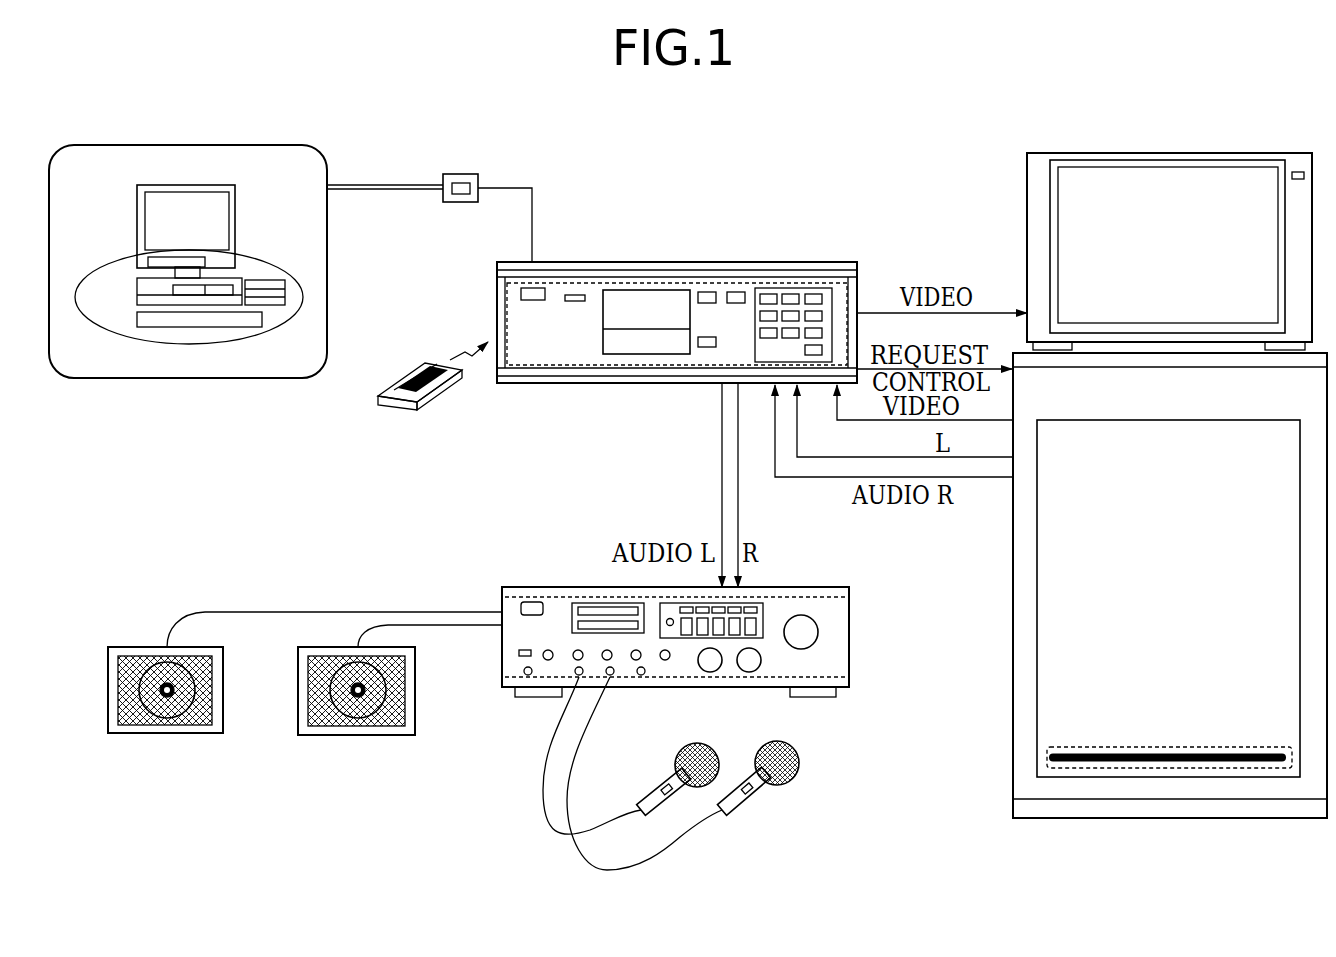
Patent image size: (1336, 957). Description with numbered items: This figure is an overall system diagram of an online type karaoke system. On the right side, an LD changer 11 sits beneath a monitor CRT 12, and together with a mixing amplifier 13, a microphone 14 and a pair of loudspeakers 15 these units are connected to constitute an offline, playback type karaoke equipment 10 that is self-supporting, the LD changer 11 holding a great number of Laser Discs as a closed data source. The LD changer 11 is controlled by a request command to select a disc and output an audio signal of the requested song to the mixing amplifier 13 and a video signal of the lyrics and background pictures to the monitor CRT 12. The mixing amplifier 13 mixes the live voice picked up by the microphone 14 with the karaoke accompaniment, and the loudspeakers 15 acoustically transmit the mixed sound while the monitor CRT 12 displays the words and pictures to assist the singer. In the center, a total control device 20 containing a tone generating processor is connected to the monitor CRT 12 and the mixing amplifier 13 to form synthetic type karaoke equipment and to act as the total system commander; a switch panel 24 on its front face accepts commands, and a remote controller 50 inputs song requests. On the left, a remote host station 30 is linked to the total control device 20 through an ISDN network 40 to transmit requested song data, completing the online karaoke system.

The playback karaoke equipment 10 is at (854, 808).
The LD changer 11 is at (1010, 697).
The monitor CRT 12 is at (1170, 152).
The mixing amplifier 13 is at (783, 586).
The microphone 14 is at (653, 787).
The loudspeakers 15 is at (160, 735).
The total control device 20 is at (677, 265).
The switch panel 24 is at (798, 263).
The host station 30 is at (190, 380).
The ISDN network 40 is at (392, 183).
The remote controller 50 is at (398, 385).